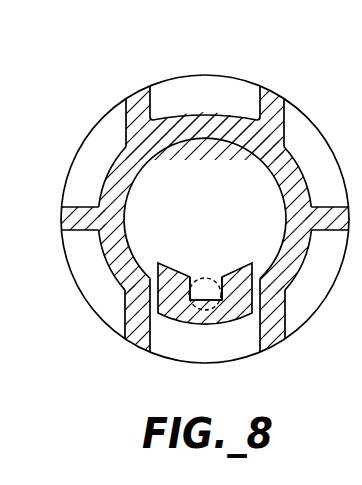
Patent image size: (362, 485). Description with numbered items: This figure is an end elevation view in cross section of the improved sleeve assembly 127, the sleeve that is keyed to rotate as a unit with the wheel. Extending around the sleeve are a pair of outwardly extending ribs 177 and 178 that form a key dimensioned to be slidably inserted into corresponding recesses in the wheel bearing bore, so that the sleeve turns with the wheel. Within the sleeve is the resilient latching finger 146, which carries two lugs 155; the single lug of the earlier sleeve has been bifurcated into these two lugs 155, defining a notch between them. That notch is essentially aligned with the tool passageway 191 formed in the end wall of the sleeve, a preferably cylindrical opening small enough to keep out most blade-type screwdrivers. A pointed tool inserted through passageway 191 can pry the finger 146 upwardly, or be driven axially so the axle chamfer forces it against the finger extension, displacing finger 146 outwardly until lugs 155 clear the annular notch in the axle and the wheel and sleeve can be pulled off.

The sleeve assembly 127 is at (110, 100).
The resilient finger 146 is at (172, 320).
The lugs 155 is at (188, 275).
The outwardly extending rib 177 is at (275, 325).
The outwardly extending rib 178 is at (142, 344).
The tool passageway 191 is at (206, 277).